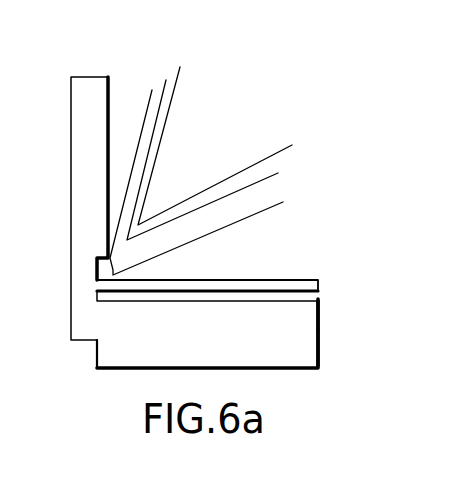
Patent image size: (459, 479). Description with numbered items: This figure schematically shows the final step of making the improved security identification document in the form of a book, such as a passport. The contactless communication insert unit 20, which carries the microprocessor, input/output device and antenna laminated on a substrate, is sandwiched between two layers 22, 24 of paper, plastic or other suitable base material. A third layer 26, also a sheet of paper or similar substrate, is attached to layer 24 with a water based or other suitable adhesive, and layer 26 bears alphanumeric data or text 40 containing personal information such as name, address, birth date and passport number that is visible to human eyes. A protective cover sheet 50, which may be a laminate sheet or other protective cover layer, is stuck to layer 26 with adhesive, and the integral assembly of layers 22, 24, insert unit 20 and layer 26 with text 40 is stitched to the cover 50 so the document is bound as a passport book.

The protective cover sheet 50 is at (70, 95).
The third layer 26 is at (110, 77).
The alphanumeric data or text 40 is at (170, 113).
The layer 22 is at (318, 299).
The contactless communication insert unit 20 is at (320, 321).
The layer 24 is at (320, 343).